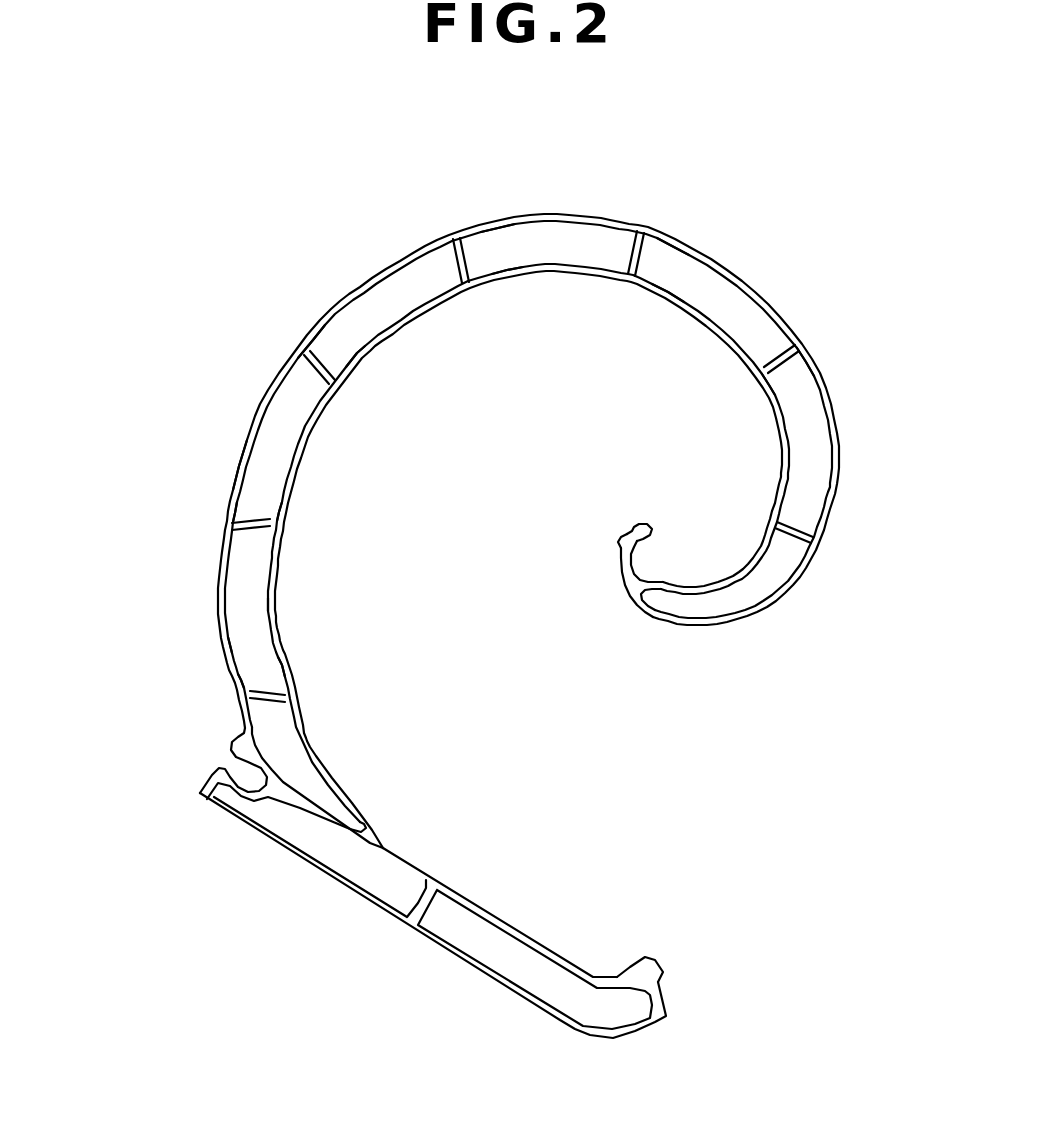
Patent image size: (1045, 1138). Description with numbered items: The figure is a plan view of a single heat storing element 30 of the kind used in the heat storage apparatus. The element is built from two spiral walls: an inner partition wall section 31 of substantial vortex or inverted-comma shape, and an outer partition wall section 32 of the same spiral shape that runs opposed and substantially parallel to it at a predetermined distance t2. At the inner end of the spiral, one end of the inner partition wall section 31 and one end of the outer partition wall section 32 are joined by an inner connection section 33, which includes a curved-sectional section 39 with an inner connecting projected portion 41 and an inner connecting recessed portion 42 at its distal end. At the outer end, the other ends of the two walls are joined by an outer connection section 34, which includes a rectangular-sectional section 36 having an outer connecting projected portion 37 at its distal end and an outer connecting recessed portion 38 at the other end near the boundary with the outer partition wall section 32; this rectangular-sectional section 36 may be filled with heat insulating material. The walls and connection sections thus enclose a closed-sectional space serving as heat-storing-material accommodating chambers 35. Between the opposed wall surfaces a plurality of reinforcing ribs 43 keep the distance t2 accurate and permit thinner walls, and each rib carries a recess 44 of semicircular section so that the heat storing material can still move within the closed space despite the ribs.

The heat storing element 30 is at (268, 300).
The inner partition wall section 31 is at (387, 345).
The outer partition wall section 32 is at (378, 272).
The inner connection section 33 is at (592, 573).
The outer connection section 34 is at (385, 843).
The heat-storing-material accommodating chambers 35 is at (270, 443).
The rectangular-sectional section 36 is at (483, 915).
The outer connecting projected portion 37 is at (650, 968).
The outer connecting recessed portion 38 is at (248, 768).
The curved-sectional section 39 is at (624, 578).
The inner connecting projected portion 41 is at (651, 527).
The inner connecting recessed portion 42 is at (622, 540).
The reinforcing ribs 43 is at (487, 255).
The recess 44 is at (457, 266).
The predetermined distance t2 is at (519, 200).